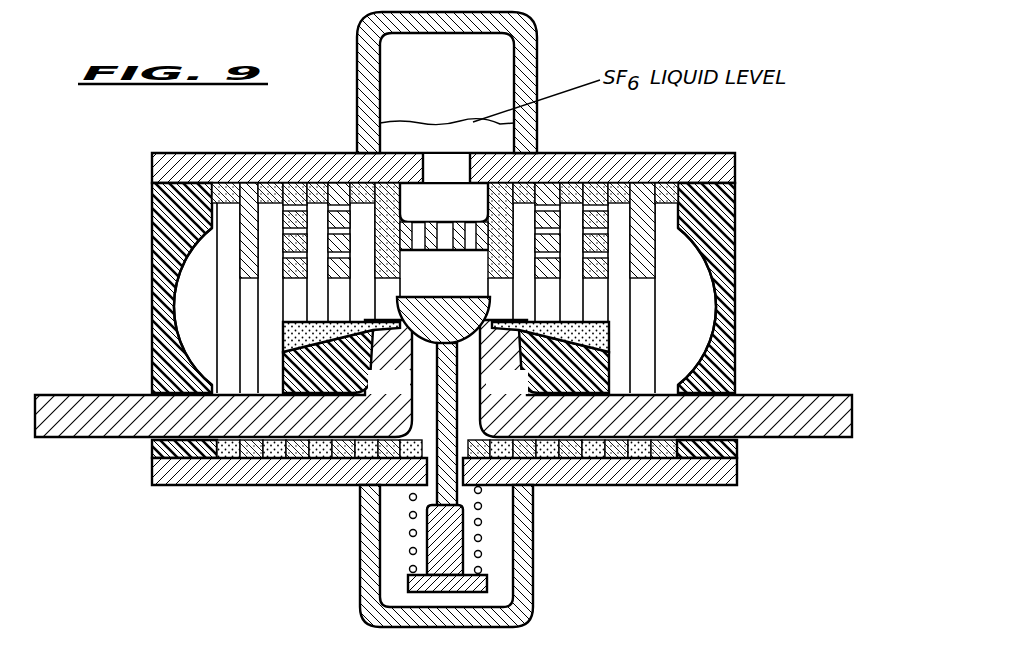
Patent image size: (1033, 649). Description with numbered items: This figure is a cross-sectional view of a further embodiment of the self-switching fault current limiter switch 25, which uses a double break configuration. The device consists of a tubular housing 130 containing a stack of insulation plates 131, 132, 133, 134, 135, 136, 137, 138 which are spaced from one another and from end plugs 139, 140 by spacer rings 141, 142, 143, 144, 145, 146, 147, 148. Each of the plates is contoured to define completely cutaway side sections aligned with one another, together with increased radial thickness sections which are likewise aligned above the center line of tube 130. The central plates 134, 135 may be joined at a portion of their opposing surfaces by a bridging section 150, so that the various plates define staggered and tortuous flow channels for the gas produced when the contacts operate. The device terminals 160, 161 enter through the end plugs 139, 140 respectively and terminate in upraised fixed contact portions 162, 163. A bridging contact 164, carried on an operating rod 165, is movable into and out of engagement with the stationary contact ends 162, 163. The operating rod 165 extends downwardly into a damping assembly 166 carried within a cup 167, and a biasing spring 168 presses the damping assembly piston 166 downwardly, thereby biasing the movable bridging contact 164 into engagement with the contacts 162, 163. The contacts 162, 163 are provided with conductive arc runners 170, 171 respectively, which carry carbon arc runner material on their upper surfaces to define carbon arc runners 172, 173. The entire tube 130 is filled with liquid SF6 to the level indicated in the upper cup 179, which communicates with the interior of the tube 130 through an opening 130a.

The interrupter assembly 25 is at (147, 265).
The tubular housing 130 is at (703, 486).
The opening 130a is at (444, 202).
The insulation plate 131 is at (255, 183).
The insulation plate 132 is at (294, 183).
The insulation plate 133 is at (340, 183).
The central insulation plate 134 is at (395, 183).
The central insulation plate 135 is at (498, 176).
The insulation plate 136 is at (557, 183).
The insulation plate 137 is at (598, 192).
The insulation plate 138 is at (670, 183).
The end plug 139 is at (150, 318).
The end plug 140 is at (738, 313).
The spacer ring 141 is at (227, 440).
The spacer ring 142 is at (277, 443).
The spacer ring 143 is at (317, 440).
The spacer ring 144 is at (360, 440).
The spacer ring 145 is at (533, 458).
The spacer ring 146 is at (577, 460).
The spacer ring 147 is at (627, 460).
The spacer ring 148 is at (735, 450).
The bridging section 150 is at (432, 253).
The device terminal 160 is at (70, 438).
The device terminal 161 is at (778, 400).
The fixed contact portion 162 is at (410, 392).
The fixed contact portion 163 is at (528, 392).
The bridging contact 164 is at (488, 323).
The operating rod 165 is at (533, 539).
The damping assembly 166 is at (533, 598).
The cup 167 is at (533, 581).
The biasing spring 168 is at (408, 569).
The conductive arc runner 170 is at (300, 374).
The conductive arc runner 171 is at (590, 378).
The carbon arc runner 172 is at (300, 336).
The carbon arc runner 173 is at (603, 331).
The upper cup 179 is at (538, 46).